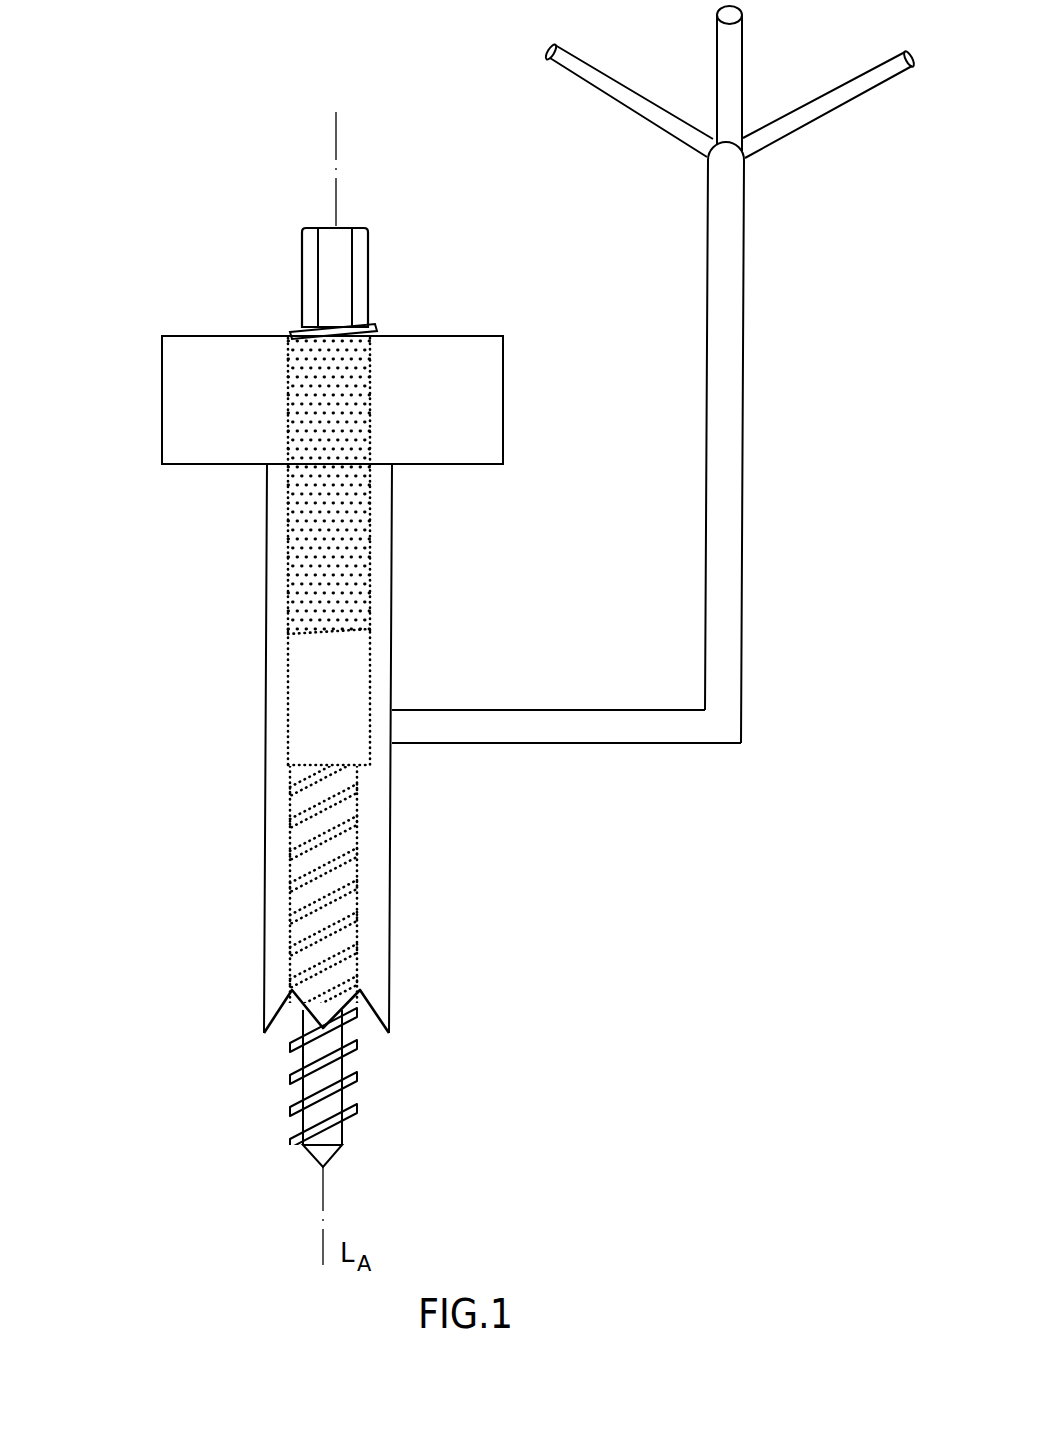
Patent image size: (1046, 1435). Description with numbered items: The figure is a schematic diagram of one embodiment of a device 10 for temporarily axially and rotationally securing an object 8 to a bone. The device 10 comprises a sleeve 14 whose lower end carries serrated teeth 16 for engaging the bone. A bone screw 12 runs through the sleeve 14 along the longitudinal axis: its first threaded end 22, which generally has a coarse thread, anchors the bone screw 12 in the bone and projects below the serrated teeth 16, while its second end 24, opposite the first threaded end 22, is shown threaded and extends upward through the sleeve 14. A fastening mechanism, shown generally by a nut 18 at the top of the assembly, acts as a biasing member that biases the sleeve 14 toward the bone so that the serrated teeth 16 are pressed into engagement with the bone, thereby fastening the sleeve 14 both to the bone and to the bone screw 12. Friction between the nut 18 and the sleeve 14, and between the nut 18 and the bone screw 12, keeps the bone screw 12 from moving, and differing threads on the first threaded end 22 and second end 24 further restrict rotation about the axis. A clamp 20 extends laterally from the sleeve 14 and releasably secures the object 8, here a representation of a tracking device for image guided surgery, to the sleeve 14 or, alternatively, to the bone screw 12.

The object 8 is at (753, 165).
The device 10 is at (542, 562).
The bone screw 12 is at (390, 914).
The sleeve 14 is at (397, 928).
The serrated teeth 16 is at (280, 1033).
The nut 18 is at (153, 412).
The clamp 20 is at (747, 720).
The first threaded end 22 is at (355, 1123).
The second end 24 is at (278, 583).